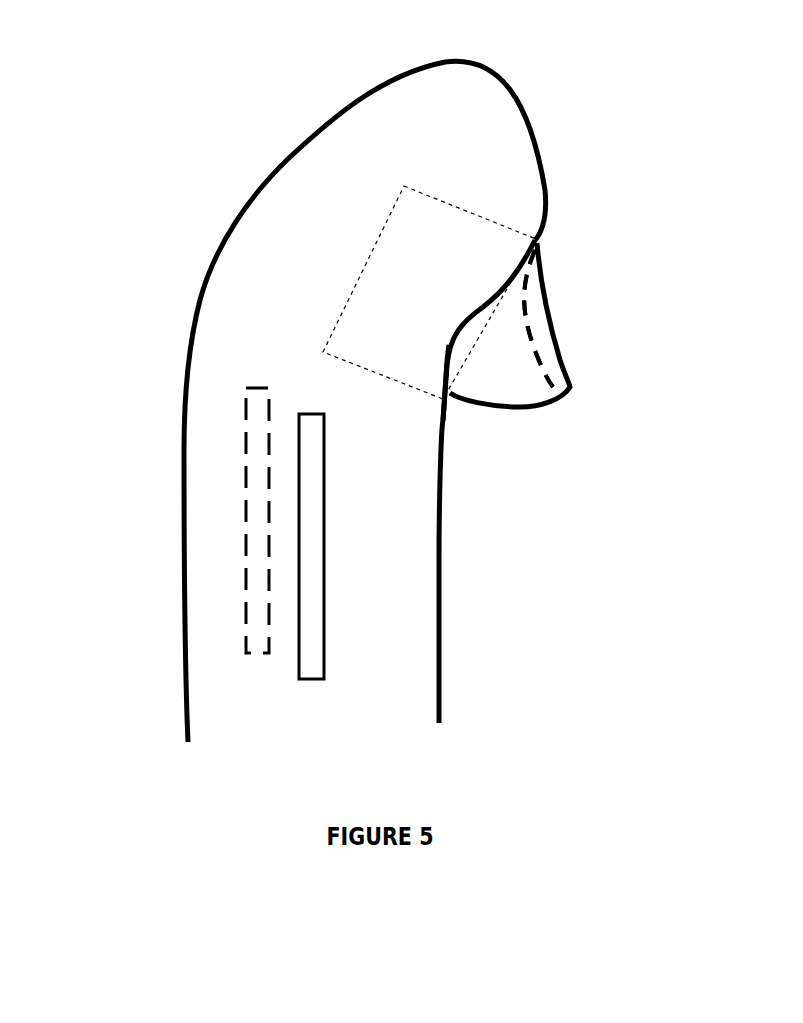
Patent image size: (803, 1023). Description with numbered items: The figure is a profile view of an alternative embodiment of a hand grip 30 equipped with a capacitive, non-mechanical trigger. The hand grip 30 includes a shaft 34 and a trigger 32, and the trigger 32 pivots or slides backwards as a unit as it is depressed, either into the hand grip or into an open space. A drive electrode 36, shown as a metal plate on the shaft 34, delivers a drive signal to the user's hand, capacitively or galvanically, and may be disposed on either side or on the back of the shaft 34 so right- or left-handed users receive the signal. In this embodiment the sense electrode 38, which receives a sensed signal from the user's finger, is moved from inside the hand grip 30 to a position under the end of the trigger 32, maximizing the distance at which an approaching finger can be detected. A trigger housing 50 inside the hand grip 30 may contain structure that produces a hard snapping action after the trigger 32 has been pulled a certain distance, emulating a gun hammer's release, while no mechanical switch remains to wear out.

The hand grip 30 is at (227, 173).
The trigger 32 is at (557, 327).
The shaft 34 is at (155, 507).
The drive electrode 36 is at (242, 410).
The sense electrode 38 is at (510, 340).
The trigger housing 50 is at (388, 211).